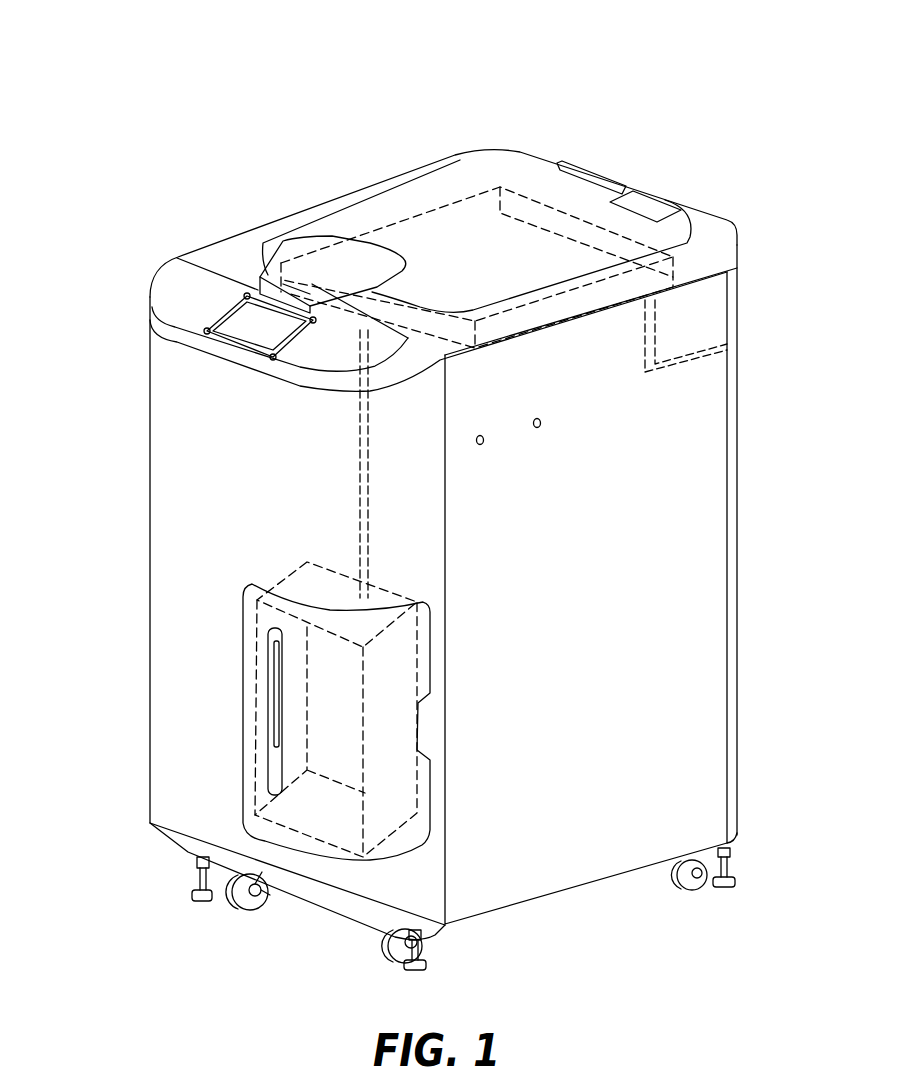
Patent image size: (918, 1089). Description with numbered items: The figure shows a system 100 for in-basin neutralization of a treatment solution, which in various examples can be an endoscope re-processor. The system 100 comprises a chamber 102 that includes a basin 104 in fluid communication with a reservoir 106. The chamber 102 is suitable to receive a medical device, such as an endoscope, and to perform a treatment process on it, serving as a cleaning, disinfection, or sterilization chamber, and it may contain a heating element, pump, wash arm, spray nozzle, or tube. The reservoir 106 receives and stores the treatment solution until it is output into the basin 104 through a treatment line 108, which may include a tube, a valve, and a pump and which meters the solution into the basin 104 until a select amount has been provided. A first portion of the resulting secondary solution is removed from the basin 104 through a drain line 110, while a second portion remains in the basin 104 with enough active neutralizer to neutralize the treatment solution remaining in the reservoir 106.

The system 100 is at (365, 88).
The chamber 102 is at (197, 255).
The basin 104 is at (377, 232).
The reservoir 106 is at (282, 583).
The treatment line 108 is at (360, 487).
The drain line 110 is at (677, 369).